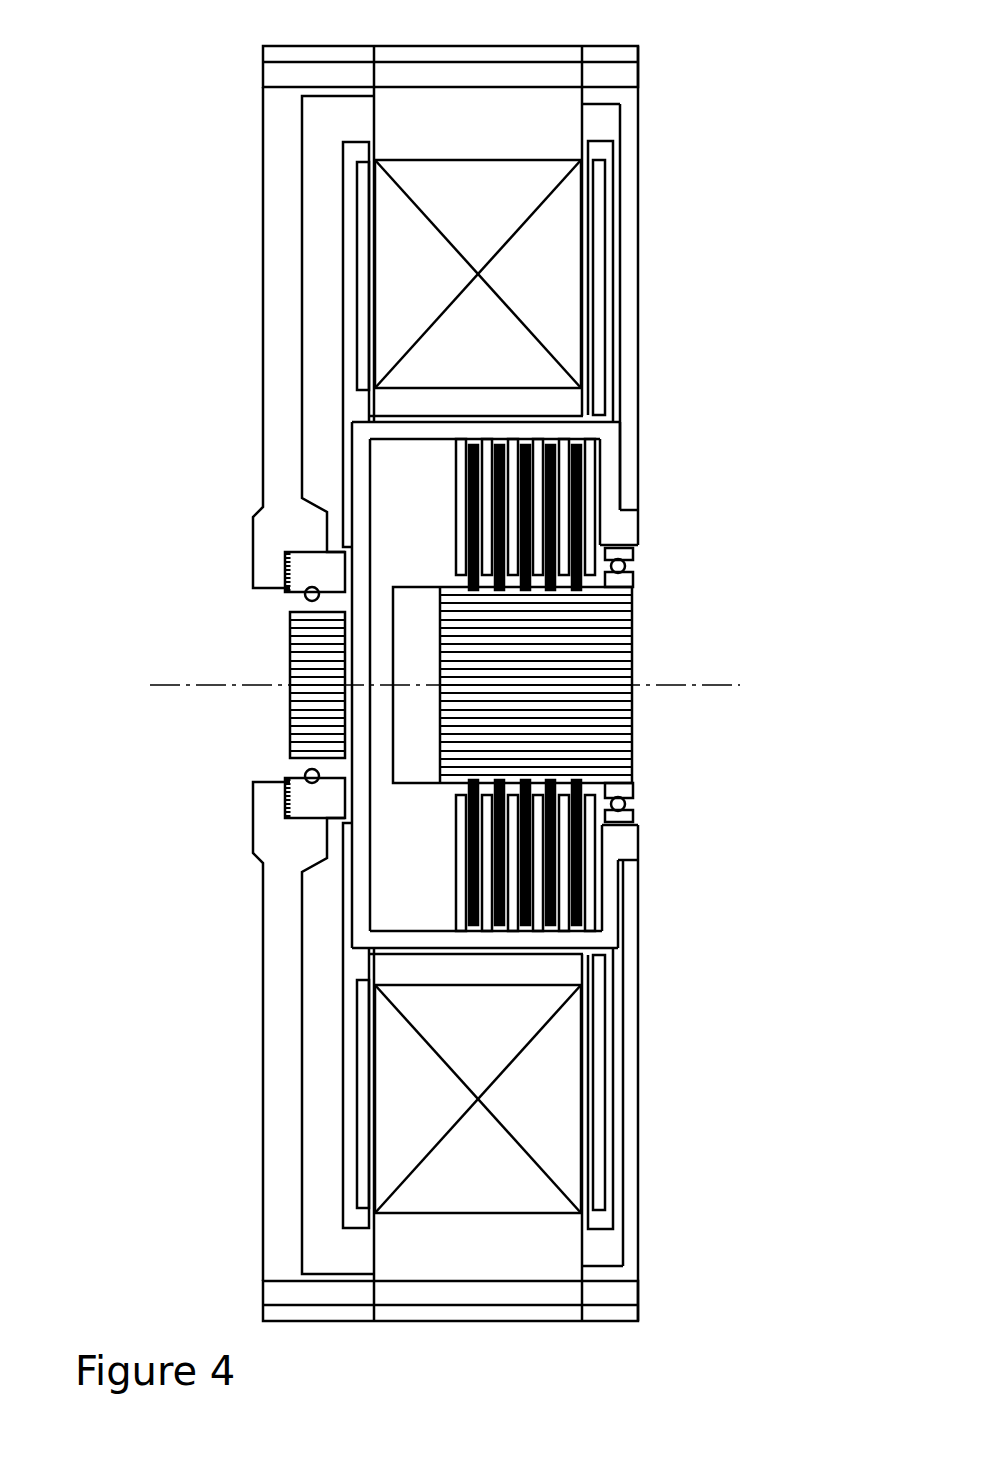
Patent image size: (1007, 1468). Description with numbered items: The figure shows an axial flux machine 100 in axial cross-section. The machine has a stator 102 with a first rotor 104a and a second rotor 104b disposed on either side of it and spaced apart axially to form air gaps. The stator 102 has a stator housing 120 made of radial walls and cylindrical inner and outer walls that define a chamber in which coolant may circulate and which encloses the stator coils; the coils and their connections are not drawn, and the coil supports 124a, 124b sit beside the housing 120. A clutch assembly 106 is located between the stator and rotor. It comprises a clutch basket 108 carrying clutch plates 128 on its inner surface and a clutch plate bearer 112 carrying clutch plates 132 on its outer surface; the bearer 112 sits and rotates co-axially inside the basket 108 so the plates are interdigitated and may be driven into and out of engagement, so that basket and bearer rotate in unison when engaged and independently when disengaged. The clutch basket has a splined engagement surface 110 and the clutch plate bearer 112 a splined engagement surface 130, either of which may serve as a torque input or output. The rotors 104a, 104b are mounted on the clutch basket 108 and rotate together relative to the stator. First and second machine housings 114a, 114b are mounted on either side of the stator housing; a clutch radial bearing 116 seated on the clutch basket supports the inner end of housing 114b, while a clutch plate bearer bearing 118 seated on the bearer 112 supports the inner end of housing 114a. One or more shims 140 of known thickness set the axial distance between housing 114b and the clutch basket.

The axial flux machine 100 is at (180, 56).
The stator 102 is at (512, 47).
The first rotor 104a is at (607, 150).
The second rotor 104b is at (343, 150).
The clutch assembly 106 is at (400, 473).
The clutch basket 108 is at (597, 430).
The engagement surface 110 is at (290, 647).
The clutch plate bearer 112 is at (445, 580).
The first machine housing 114a is at (632, 350).
The second machine housing 114b is at (268, 257).
The clutch radial bearing 116 is at (303, 590).
The clutch plate bearer bearing 118 is at (626, 568).
The stator housing 120 is at (455, 108).
The coil support 124a is at (597, 225).
The coil support 124b is at (357, 185).
The clutch plates 128 is at (592, 485).
The engagement surface 130 is at (620, 728).
The clutch plates 132 is at (580, 515).
The shim 140 is at (287, 576).